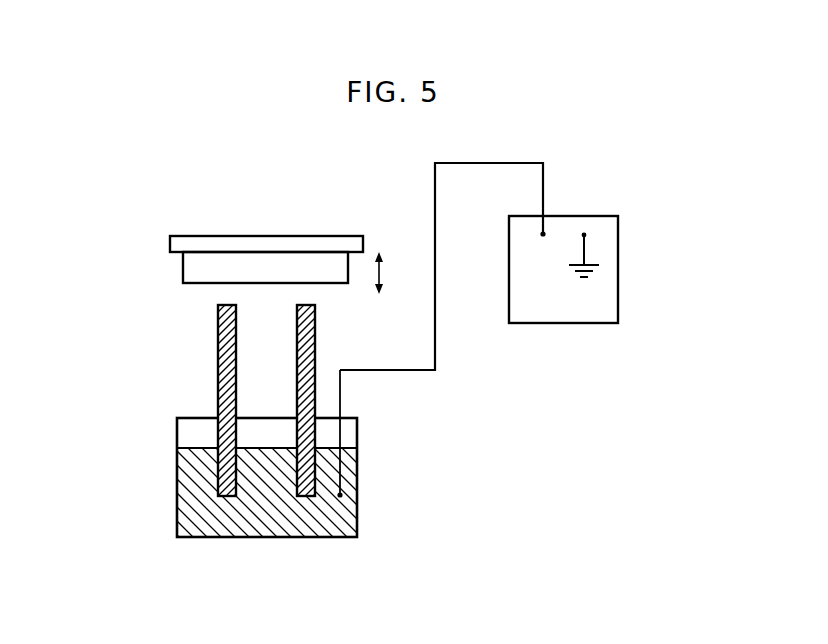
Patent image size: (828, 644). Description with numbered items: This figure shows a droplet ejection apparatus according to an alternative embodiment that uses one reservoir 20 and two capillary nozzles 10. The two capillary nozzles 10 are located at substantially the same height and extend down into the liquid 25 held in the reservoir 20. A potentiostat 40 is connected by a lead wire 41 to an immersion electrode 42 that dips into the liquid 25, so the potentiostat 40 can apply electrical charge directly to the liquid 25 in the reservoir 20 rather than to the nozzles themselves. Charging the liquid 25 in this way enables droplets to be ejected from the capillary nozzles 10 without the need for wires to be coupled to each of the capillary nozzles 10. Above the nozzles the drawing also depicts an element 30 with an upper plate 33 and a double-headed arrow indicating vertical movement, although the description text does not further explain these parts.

The capillary nozzle 10 is at (209, 354).
The reservoir 20 is at (192, 418).
The liquid 25 is at (272, 507).
The moving body 30 is at (183, 268).
The upper plate 33 is at (172, 244).
The potentiostat 40 is at (582, 216).
The lead wire 41 is at (435, 250).
The immersion electrode 42 is at (341, 472).